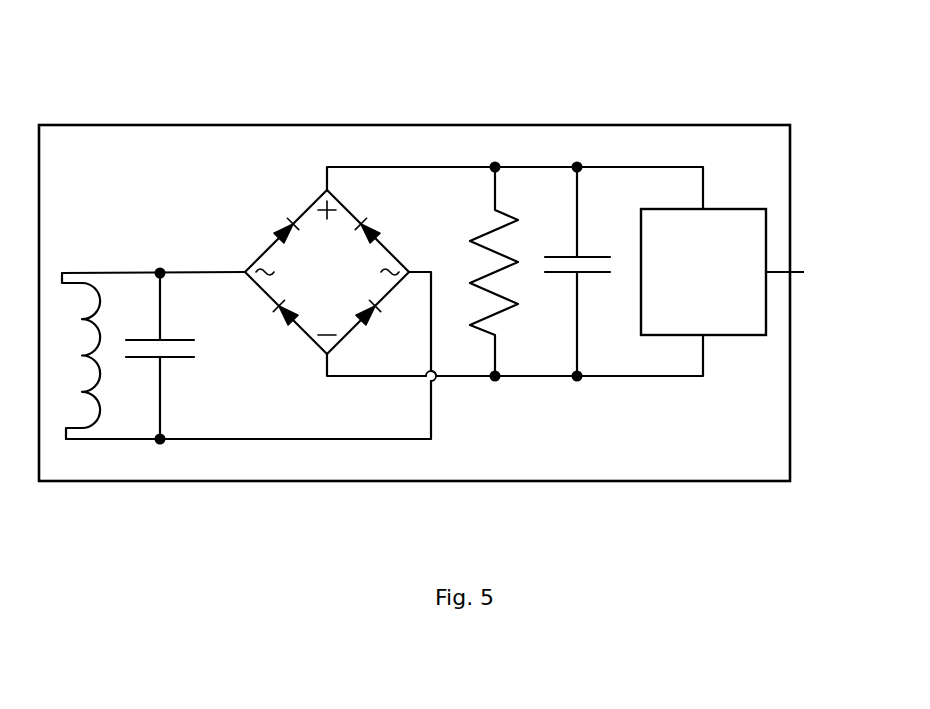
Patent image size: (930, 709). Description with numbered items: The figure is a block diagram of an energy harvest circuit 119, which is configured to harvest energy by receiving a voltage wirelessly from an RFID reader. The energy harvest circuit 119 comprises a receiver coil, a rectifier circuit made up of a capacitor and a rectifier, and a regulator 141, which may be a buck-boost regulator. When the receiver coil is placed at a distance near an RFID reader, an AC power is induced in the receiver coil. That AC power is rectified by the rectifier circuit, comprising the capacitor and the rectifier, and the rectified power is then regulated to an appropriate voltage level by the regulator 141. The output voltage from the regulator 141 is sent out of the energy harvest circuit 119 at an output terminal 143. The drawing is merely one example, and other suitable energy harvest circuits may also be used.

The energy harvest circuit 119 is at (396, 85).
The regulator 141 is at (703, 272).
The output terminal 143 is at (796, 270).